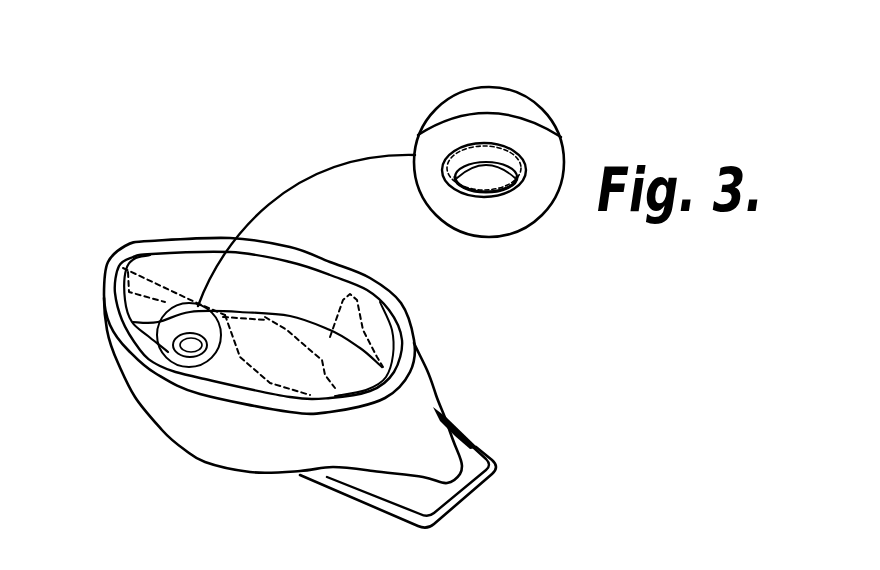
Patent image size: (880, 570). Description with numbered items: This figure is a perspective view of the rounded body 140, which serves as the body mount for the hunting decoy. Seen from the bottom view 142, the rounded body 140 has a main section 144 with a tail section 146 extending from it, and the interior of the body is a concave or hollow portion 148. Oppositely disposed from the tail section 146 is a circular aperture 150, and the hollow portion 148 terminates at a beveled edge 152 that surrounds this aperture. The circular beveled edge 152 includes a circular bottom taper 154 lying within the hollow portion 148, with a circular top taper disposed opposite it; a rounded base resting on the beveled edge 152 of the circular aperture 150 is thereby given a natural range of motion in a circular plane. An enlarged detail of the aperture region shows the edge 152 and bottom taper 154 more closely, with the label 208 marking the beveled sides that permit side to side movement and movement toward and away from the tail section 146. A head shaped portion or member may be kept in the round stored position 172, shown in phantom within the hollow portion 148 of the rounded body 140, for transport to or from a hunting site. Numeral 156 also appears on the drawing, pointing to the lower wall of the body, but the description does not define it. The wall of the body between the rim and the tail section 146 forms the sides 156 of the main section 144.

The rounded body 140 is at (490, 325).
The bottom view 142 is at (134, 190).
The main section 144 is at (217, 443).
The tail section 146 is at (466, 447).
The hollow portion 148 is at (318, 293).
The circular aperture 150 is at (183, 340).
The beveled edge 152 is at (508, 149).
The circular bottom taper 154 is at (483, 157).
The lower wall 156 is at (187, 387).
The round stored position 172 is at (290, 365).
The beveled cradle sides 208 is at (410, 105).